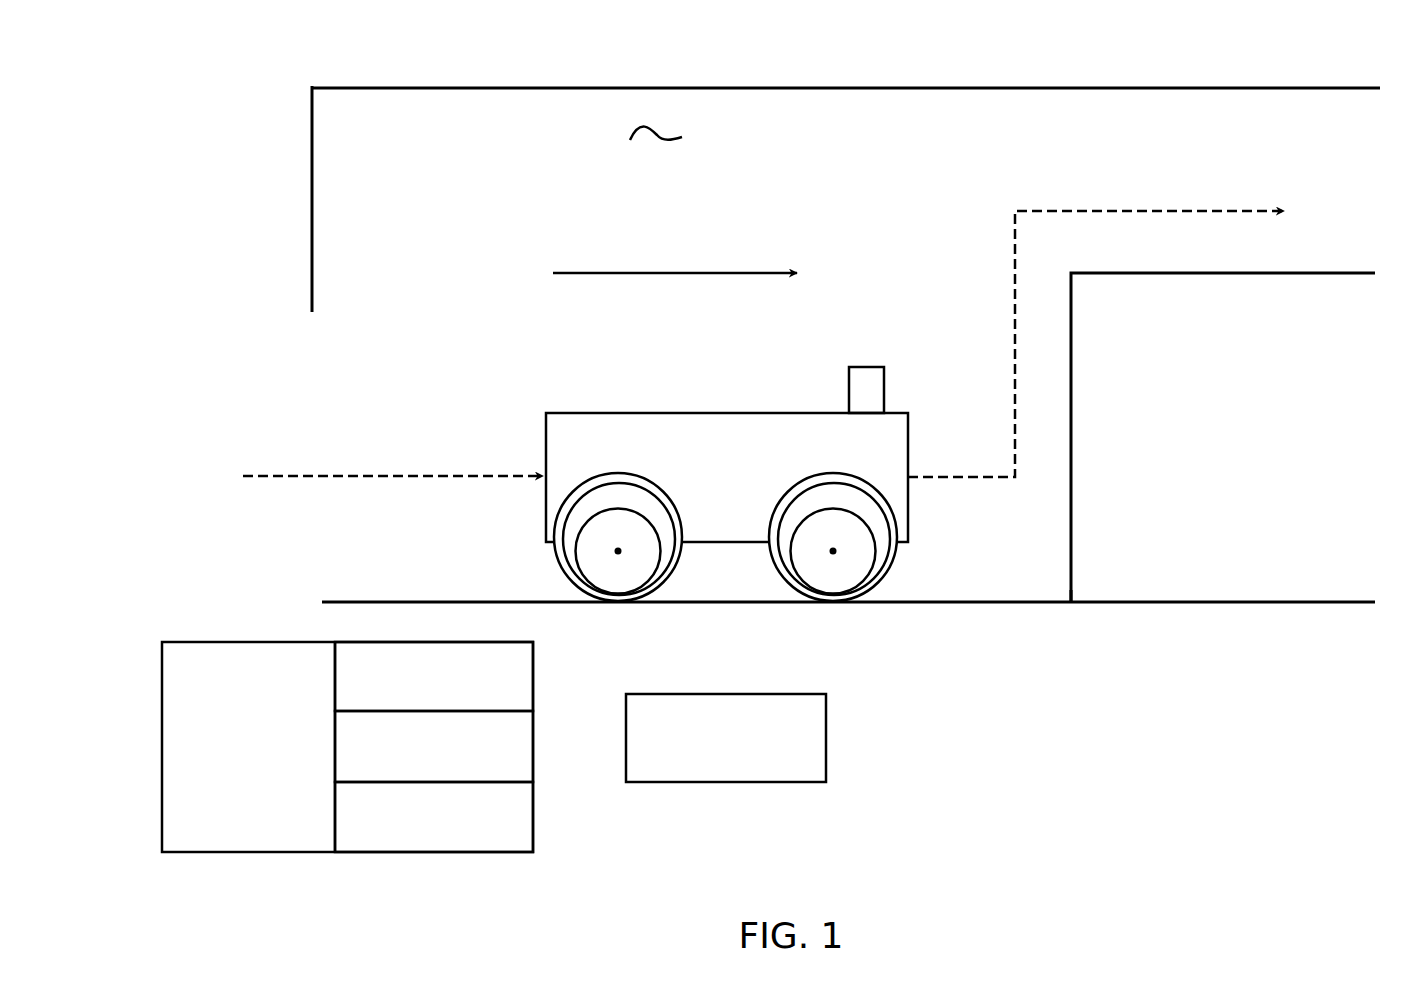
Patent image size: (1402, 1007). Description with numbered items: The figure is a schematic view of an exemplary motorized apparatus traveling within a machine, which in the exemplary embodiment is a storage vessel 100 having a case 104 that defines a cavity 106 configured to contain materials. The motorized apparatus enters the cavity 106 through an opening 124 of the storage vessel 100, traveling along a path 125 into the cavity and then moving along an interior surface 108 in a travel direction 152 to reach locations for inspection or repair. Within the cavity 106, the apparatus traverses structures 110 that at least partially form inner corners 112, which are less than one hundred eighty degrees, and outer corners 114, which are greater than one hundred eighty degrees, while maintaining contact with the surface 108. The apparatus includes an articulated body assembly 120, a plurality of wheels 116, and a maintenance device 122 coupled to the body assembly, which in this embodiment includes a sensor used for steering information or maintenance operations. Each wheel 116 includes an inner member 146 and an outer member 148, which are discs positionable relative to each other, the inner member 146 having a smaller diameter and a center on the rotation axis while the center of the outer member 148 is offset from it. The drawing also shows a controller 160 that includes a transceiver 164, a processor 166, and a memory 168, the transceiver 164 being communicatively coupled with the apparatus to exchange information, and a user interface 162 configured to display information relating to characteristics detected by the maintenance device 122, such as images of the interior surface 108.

The storage vessel 100 is at (286, 80).
The case 104 is at (478, 88).
The cavity 106 is at (657, 125).
The surface 108 is at (988, 601).
The structure 110 is at (1239, 566).
The inner corner 112 is at (1076, 610).
The outer corner 114 is at (1076, 258).
The wheel 116 is at (661, 469).
The articulated body assembly 120 is at (549, 393).
The maintenance device 122 is at (864, 385).
The opening 124 is at (312, 310).
The path 125 is at (394, 475).
The inner member 146 is at (628, 560).
The outer member 148 is at (560, 516).
The travel direction 152 is at (676, 272).
The controller 160 is at (247, 853).
The user interface 162 is at (725, 783).
The transceiver 164 is at (503, 712).
The processor 166 is at (503, 783).
The memory 168 is at (433, 853).